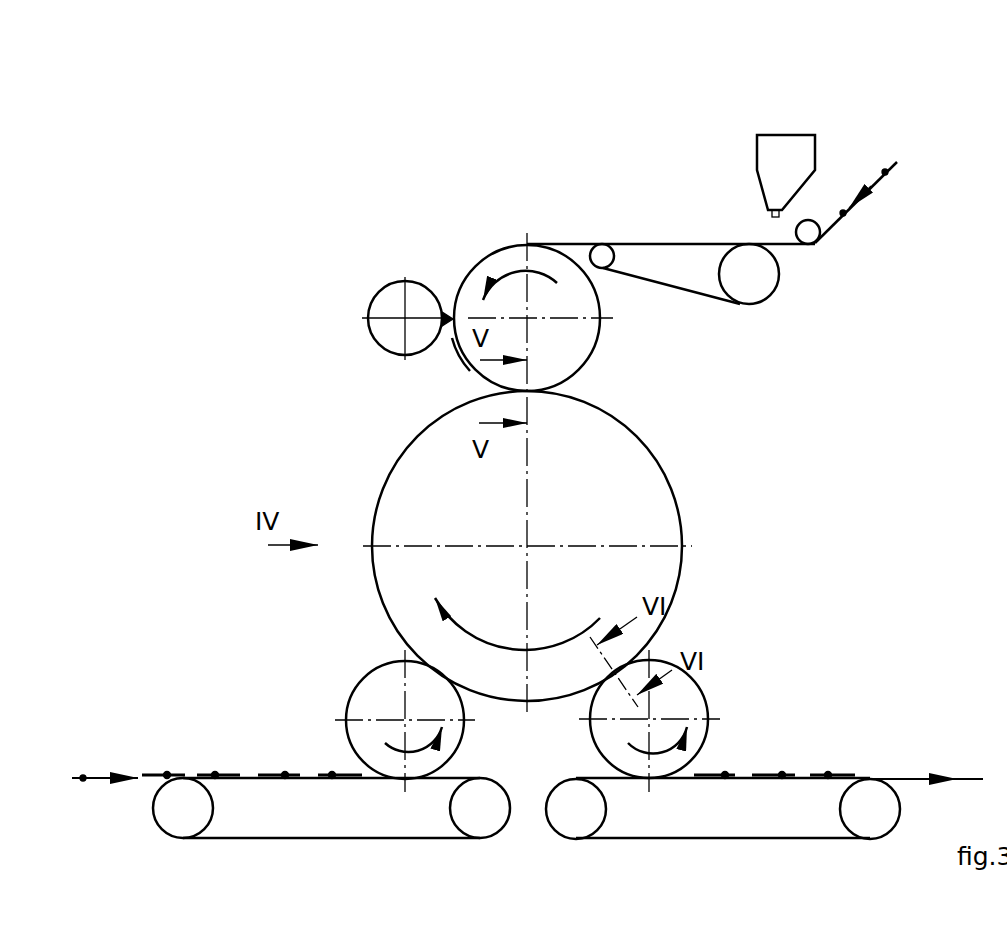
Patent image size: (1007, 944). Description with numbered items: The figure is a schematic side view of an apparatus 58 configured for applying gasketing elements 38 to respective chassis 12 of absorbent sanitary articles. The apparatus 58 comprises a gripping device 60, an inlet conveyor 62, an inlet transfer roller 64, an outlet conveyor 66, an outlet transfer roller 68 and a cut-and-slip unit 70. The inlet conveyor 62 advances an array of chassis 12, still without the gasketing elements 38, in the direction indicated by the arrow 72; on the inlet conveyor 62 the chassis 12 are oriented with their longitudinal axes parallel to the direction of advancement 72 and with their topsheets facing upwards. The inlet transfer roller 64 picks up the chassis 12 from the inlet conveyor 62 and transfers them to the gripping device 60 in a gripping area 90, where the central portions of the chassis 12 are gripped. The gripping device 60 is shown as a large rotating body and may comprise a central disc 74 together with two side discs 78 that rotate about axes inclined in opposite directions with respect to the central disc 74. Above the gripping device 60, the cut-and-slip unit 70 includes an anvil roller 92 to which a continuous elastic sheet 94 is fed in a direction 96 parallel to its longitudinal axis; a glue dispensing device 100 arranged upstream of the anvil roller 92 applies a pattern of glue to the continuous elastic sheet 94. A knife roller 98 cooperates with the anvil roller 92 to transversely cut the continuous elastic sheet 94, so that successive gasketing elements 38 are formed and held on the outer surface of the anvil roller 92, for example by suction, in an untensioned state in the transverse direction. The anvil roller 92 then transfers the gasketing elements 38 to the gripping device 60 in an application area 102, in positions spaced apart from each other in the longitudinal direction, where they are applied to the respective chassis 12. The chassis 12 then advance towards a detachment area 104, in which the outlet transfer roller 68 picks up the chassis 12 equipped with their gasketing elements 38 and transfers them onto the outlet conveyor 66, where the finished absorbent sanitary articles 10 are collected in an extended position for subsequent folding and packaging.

The finished absorbent sanitary articles 10 is at (828, 775).
The chassis 12 is at (215, 775).
The gasketing elements 38 is at (458, 346).
The apparatus 58 is at (248, 238).
The gripping device 60 is at (335, 487).
The inlet conveyor 62 is at (242, 750).
The inlet transfer roller 64 is at (480, 735).
The outlet conveyor 66 is at (845, 748).
The outlet transfer roller 68 is at (728, 683).
The cut-and-slip unit 70 is at (753, 164).
The direction of advancement 72 is at (83, 778).
The central disc 74 is at (583, 546).
The side discs 78 is at (678, 500).
The gripping area 90 is at (443, 690).
The anvil roller 92 is at (492, 248).
The continuous elastic sheet 94 is at (843, 213).
The feed direction 96 is at (885, 172).
The knife roller 98 is at (385, 278).
The glue dispensing device 100 is at (758, 105).
The application area 102 is at (577, 389).
The detachment area 104 is at (657, 642).